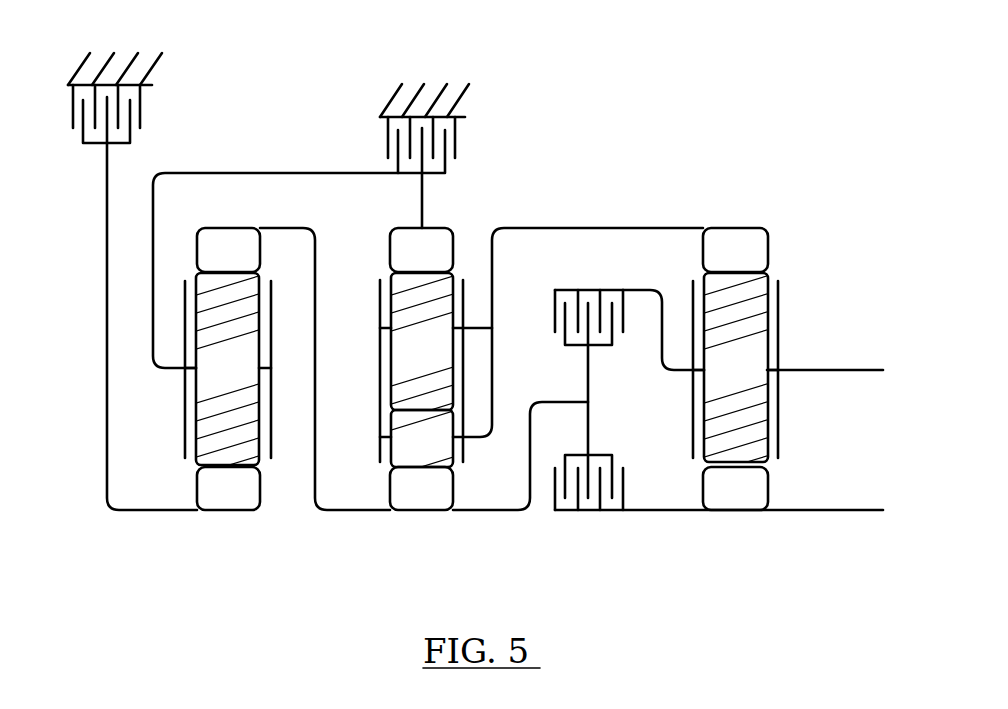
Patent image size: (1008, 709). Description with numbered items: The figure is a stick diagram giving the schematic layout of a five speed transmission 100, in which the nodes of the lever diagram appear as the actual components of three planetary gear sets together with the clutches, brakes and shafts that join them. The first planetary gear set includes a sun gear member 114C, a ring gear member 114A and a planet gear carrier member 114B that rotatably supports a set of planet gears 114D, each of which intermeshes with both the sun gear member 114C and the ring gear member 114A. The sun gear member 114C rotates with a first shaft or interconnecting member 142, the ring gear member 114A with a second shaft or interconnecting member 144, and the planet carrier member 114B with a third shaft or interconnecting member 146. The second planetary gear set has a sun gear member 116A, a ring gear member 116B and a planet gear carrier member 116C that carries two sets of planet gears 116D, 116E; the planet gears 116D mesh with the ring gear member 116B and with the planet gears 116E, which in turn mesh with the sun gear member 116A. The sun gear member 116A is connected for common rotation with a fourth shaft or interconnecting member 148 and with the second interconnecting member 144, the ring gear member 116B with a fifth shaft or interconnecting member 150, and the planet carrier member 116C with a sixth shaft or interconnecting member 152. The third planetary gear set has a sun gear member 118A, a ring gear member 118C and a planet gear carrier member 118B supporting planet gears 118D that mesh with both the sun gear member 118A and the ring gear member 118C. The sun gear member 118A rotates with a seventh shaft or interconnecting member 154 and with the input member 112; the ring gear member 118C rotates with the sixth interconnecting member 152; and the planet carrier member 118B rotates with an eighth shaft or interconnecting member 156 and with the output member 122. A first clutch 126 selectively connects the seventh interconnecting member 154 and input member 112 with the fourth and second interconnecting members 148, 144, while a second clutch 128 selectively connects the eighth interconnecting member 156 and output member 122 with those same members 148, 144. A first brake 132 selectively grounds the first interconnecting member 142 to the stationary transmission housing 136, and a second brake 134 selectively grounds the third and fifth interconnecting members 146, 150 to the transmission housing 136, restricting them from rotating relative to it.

The five speed transmission 100 is at (772, 117).
The input member 112 is at (836, 512).
The ring gear member 114A is at (222, 250).
The planet gear carrier member 114B is at (185, 428).
The sun gear member 114C is at (232, 490).
The planet gears 114D is at (227, 375).
The sun gear member 116A is at (420, 490).
The ring gear member 116B is at (433, 241).
The planet gear carrier member 116C is at (467, 394).
The planet gears 116D is at (422, 348).
The planet gears 116E is at (422, 443).
The sun gear member 118A is at (738, 490).
The planet gear carrier member 118B is at (778, 306).
The ring gear member 118C is at (735, 245).
The planet gears 118D is at (735, 375).
The output member 122 is at (850, 372).
The first clutch 126 is at (553, 495).
The second clutch 128 is at (555, 315).
The first brake 132 is at (143, 115).
The second brake 134 is at (388, 140).
The transmission housing 136 is at (133, 60).
The first shaft or interconnecting member 142 is at (107, 338).
The second shaft or interconnecting member 144 is at (306, 475).
The third shaft or interconnecting member 146 is at (240, 172).
The fourth shaft or interconnecting member 148 is at (486, 512).
The fifth shaft or interconnecting member 150 is at (418, 196).
The sixth shaft or interconnecting member 152 is at (605, 225).
The seventh shaft or interconnecting member 154 is at (650, 512).
The eighth shaft or interconnecting member 156 is at (655, 334).